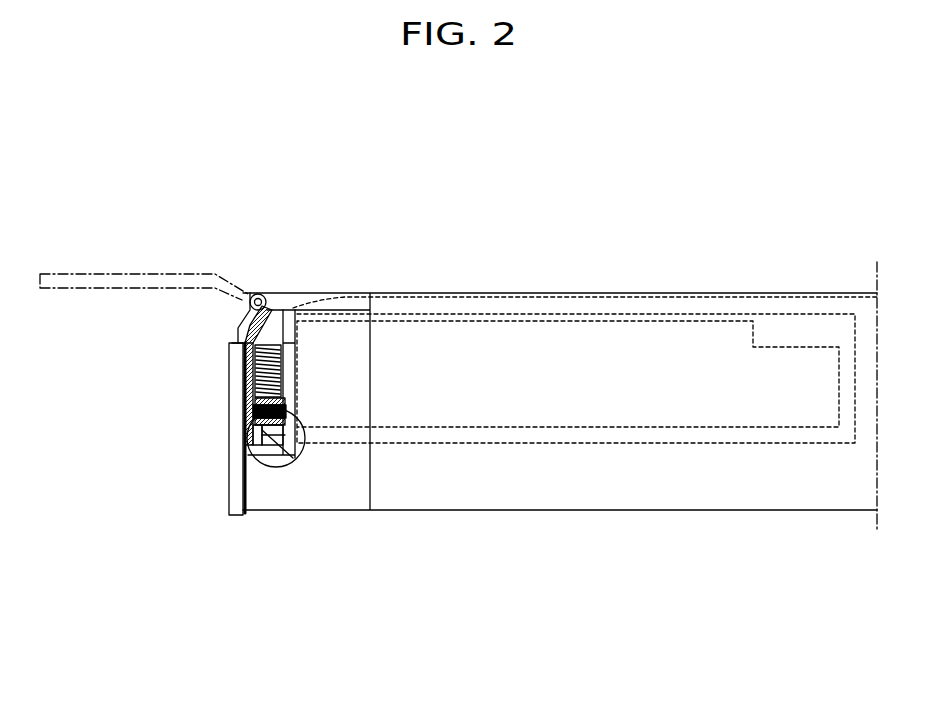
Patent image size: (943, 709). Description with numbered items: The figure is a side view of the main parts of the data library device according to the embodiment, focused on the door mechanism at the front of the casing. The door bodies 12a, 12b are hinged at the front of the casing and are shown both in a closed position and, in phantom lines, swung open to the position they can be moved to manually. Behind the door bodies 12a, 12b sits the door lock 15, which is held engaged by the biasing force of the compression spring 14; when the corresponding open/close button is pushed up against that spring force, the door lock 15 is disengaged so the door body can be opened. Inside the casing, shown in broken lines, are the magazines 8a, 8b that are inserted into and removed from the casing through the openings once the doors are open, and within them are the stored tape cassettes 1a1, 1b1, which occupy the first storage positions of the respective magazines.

The tape cassette 1a1 is at (560, 364).
The tape cassette 1b1 is at (565, 335).
The magazine 8a is at (576, 473).
The magazine 8b is at (690, 435).
The door body 12a is at (188, 413).
The door body 12b is at (75, 268).
The compression spring 14 is at (270, 347).
The door lock 15 is at (298, 466).